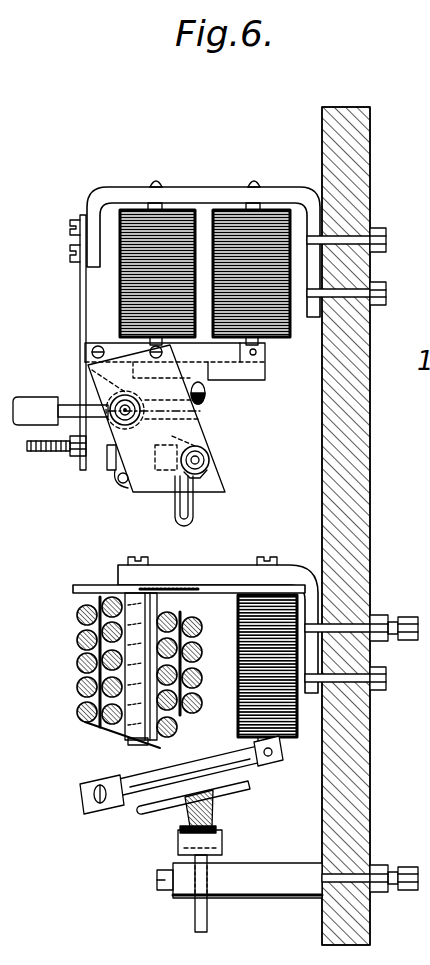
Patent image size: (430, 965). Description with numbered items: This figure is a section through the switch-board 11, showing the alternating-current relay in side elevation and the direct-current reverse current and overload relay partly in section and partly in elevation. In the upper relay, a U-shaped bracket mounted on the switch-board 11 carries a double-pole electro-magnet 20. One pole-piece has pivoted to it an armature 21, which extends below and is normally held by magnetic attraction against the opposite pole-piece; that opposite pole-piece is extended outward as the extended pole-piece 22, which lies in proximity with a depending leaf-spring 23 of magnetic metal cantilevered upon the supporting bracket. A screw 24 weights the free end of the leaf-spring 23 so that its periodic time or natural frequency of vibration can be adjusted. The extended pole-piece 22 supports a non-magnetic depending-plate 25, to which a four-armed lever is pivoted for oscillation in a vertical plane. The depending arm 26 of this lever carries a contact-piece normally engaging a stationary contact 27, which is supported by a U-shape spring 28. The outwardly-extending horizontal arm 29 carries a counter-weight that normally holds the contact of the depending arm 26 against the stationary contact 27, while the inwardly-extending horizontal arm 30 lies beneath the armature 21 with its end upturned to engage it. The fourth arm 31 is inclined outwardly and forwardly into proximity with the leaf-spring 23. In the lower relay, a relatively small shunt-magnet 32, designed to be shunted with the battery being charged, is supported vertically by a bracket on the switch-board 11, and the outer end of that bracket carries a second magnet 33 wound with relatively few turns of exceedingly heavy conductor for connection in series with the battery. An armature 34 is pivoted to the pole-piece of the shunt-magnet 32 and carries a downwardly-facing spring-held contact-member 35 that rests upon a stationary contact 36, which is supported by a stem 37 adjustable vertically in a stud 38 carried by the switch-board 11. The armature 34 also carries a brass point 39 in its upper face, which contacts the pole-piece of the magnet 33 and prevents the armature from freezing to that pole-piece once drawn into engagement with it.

The switch-board 11 is at (368, 174).
The double-pole electro-magnet 20 is at (201, 230).
The armature 21 is at (248, 368).
The extended pole-piece 22 is at (116, 348).
The leaf-spring 23 is at (80, 296).
The screw 24 is at (56, 452).
The depending-plate 25 is at (195, 426).
The depending arm 26 is at (115, 484).
The stationary contact 27 is at (208, 441).
The U-shape spring 28 is at (174, 511).
The outwardly-extending horizontal arm 29 is at (68, 405).
The inwardly-extending horizontal arm 30 is at (206, 394).
The fourth arm 31 is at (86, 375).
The shunt-magnet 32 is at (247, 685).
The series magnet 33 is at (82, 670).
The armature 34 is at (256, 764).
The spring-held contact-member 35 is at (208, 818).
The stationary contact 36 is at (224, 845).
The stem 37 is at (195, 912).
The stud 38 is at (286, 857).
The brass point 39 is at (148, 780).